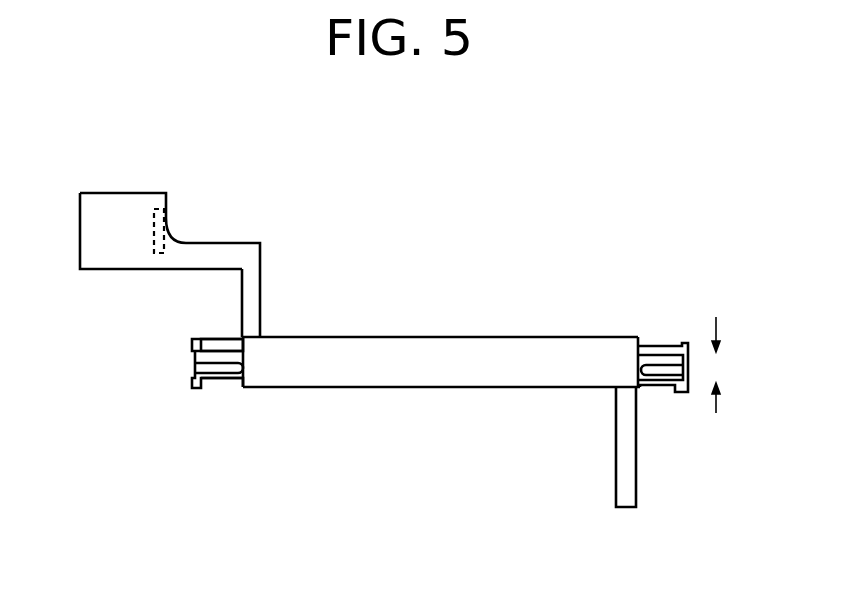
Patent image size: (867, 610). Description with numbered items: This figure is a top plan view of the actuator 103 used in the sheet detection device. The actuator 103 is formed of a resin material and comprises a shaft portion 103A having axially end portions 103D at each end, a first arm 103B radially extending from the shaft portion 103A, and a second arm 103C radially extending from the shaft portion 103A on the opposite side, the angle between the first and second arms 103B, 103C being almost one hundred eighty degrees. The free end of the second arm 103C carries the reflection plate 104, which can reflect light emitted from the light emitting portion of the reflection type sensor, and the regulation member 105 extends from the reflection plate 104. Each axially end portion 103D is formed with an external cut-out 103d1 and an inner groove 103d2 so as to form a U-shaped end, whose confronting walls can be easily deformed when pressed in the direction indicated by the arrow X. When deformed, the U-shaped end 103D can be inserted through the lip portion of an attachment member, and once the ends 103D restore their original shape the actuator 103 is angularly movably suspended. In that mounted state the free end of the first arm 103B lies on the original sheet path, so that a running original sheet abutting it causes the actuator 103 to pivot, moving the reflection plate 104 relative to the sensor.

The actuator 103 is at (413, 312).
The shaft portion 103A is at (423, 352).
The first arm 103B is at (625, 477).
The second arm 103C is at (248, 308).
The axially end portion 103D is at (207, 385).
The external cut-out 103d1 is at (230, 349).
The inner groove 103d2 is at (197, 368).
The reflection plate 104 is at (118, 210).
The regulation member 105 is at (168, 222).